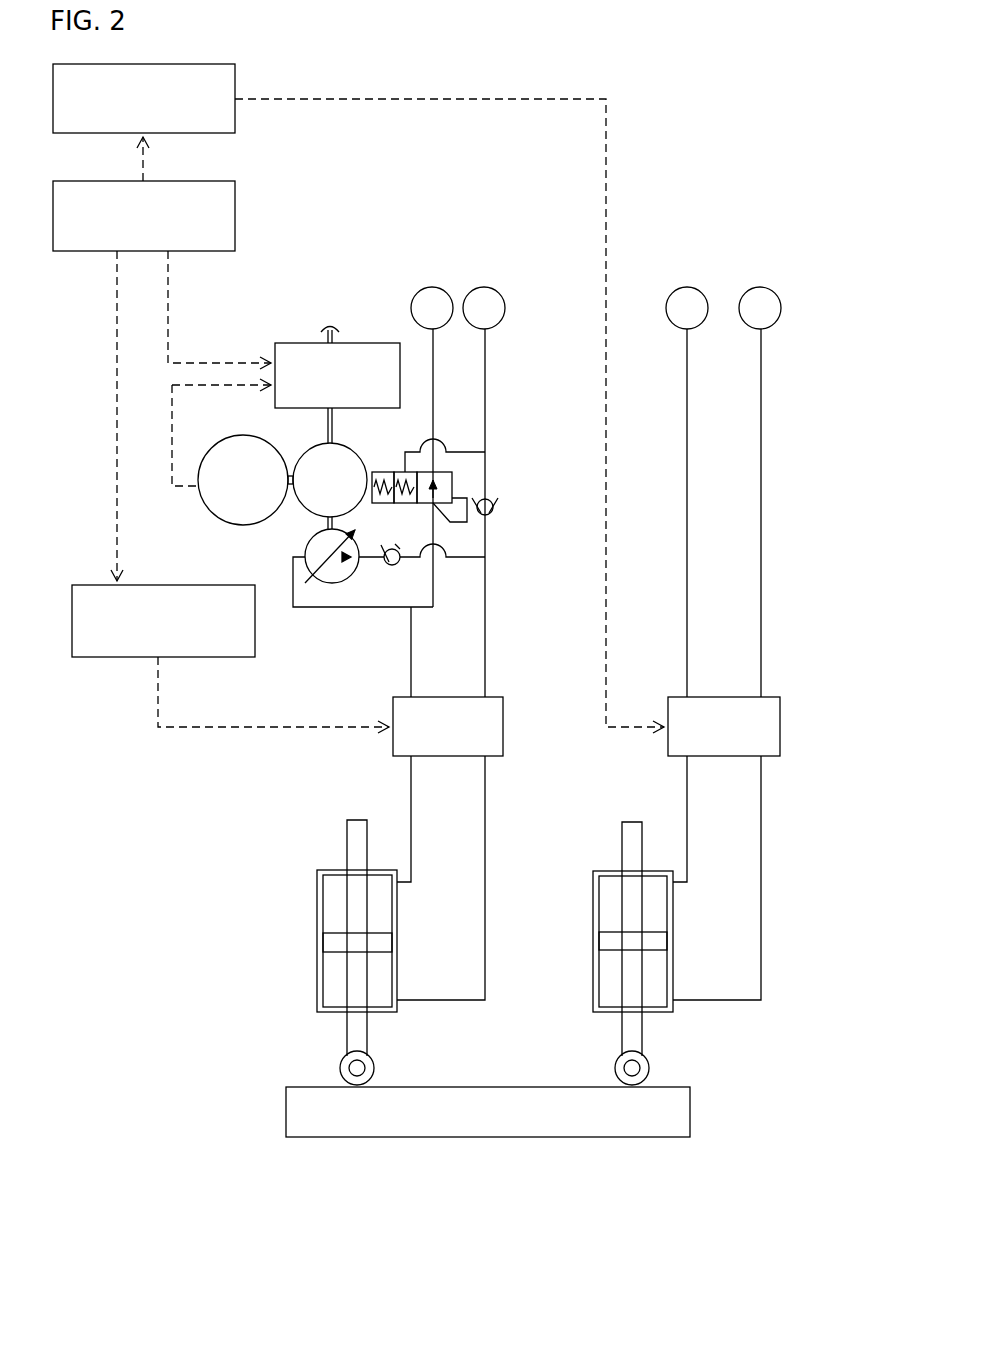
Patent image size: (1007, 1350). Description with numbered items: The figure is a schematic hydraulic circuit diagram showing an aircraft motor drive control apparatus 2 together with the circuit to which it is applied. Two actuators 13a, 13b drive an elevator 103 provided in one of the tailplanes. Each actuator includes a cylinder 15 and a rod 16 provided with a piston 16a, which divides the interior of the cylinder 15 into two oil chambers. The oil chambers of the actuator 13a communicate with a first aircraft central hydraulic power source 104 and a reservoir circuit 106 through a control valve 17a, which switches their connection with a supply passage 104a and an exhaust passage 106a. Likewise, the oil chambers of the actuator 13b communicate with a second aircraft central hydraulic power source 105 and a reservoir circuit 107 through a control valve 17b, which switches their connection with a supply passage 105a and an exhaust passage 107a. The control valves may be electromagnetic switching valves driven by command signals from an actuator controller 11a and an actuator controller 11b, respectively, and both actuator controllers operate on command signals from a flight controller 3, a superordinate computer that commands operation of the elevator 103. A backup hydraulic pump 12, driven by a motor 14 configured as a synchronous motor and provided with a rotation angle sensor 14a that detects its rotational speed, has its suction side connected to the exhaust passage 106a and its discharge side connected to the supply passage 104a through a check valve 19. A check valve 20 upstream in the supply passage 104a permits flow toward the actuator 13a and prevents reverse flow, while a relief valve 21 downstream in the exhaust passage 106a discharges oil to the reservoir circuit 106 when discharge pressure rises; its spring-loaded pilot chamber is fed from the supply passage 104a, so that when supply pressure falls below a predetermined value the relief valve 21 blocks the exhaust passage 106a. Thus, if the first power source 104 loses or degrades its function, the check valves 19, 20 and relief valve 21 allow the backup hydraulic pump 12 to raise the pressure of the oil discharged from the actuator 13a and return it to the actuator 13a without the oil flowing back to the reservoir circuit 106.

The actuator controller 11b is at (236, 128).
The flight controller 3 is at (237, 210).
The aircraft motor drive control apparatus 2 is at (303, 342).
The motor 14 is at (304, 454).
The rotation angle sensor 14a is at (205, 455).
The backup hydraulic pump 12 is at (311, 537).
The check valve 19 is at (381, 568).
The relief valve 21 is at (461, 474).
The check valve 20 is at (502, 493).
The reservoir circuit 106 is at (432, 287).
The exhaust passage 106a is at (432, 350).
The first aircraft central hydraulic power source 104 is at (488, 287).
The supply passage 104a is at (486, 357).
The control valve 17a is at (503, 708).
The reservoir circuit 107 is at (688, 287).
The second aircraft central hydraulic power source 105 is at (760, 287).
The exhaust passage 107a is at (687, 473).
The supply passage 105a is at (761, 468).
The control valve 17b is at (780, 717).
The actuator controller 11a is at (133, 657).
The cylinder 15 is at (318, 908).
The piston 16a is at (337, 942).
The rod 16 is at (373, 1028).
The actuator 13a is at (311, 1022).
The actuator 13b is at (684, 1030).
The elevator 103 is at (472, 1120).